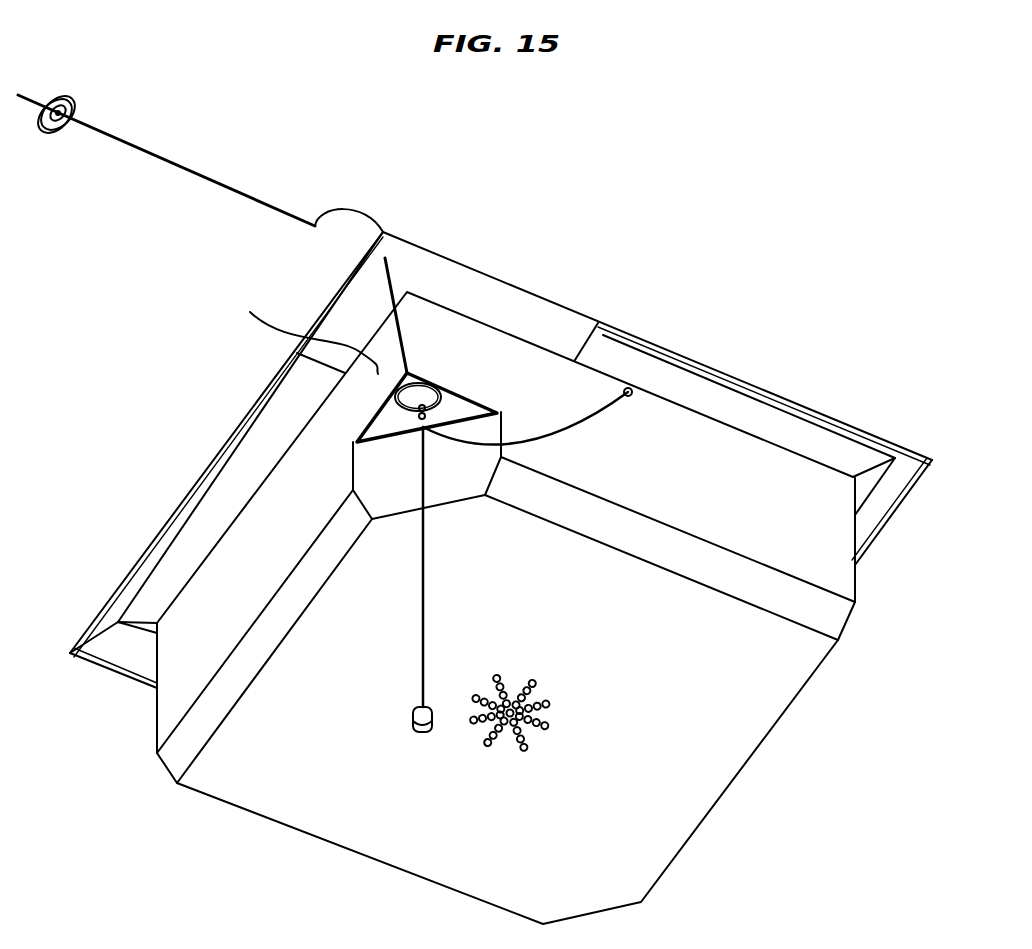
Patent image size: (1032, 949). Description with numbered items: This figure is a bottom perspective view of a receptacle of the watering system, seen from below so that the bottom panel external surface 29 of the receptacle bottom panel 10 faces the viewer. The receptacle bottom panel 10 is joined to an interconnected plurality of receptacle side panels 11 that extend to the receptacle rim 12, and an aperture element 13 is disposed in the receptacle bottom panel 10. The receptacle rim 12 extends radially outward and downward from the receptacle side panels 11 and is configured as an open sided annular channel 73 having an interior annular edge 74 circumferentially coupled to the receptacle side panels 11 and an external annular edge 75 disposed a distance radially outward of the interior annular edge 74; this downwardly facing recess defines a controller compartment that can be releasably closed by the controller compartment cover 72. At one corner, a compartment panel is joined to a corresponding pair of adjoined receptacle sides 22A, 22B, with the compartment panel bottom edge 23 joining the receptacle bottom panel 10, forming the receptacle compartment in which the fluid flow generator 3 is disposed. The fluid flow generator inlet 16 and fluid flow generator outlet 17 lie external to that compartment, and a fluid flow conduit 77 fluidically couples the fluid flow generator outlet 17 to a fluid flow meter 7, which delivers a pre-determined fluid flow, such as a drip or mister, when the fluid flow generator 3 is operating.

The fluid flow generator 3 is at (375, 422).
The fluid flow meter 7 is at (63, 103).
The receptacle bottom panel 10 is at (683, 785).
The receptacle side panels 11 is at (708, 445).
The receptacle rim 12 is at (207, 490).
The aperture element 13 is at (515, 693).
The fluid flow generator inlet 16 is at (470, 399).
The fluid flow generator outlet 17 is at (437, 380).
The adjoined receptacle side 22A is at (306, 330).
The adjoined receptacle side 22B is at (440, 337).
The compartment panel bottom edge 23 is at (456, 502).
The bottom panel external surface 29 is at (224, 784).
The controller compartment cover 72 is at (523, 305).
The open sided annular channel 73 is at (847, 447).
The interior annular edge 74 is at (770, 443).
The external annular edge 75 is at (888, 522).
The fluid flow conduit 77 is at (178, 165).